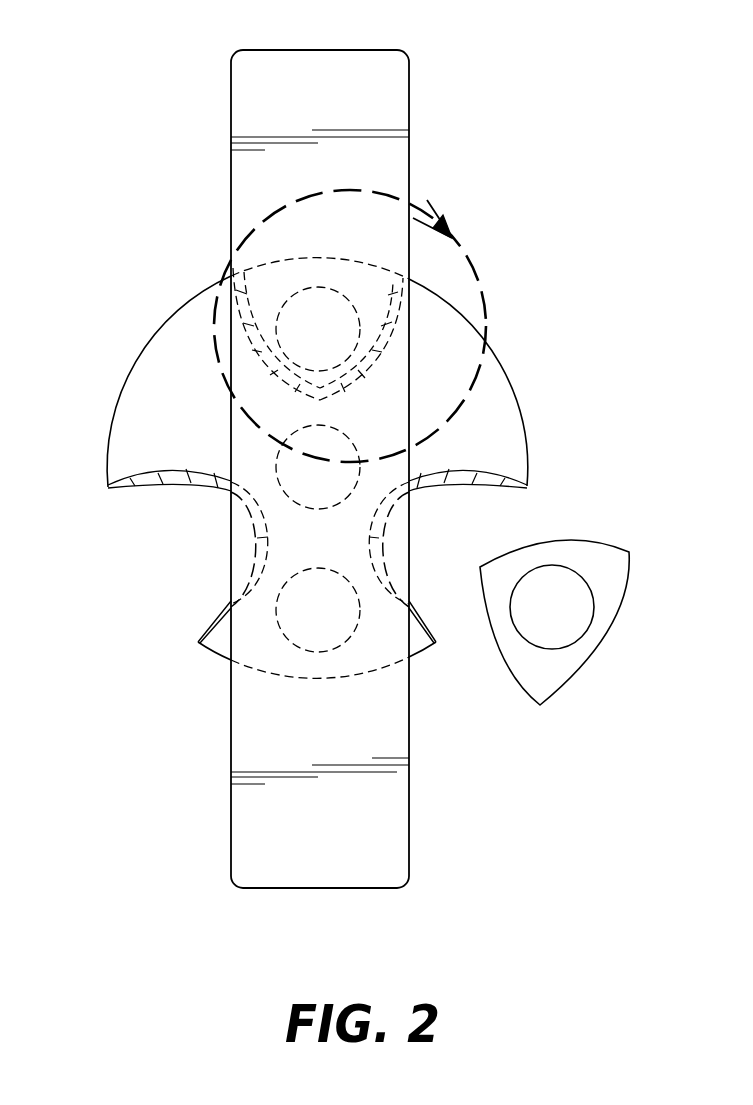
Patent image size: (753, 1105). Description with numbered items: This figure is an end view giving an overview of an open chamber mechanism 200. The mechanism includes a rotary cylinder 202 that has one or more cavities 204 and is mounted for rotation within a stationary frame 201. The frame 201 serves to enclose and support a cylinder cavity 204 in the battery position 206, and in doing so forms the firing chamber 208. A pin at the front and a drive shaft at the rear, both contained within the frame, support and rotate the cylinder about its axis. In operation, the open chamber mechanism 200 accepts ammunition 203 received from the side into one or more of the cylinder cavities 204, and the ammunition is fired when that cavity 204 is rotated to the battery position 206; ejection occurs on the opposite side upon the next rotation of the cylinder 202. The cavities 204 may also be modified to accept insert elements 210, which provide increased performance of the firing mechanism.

The open chamber mechanism 200 is at (481, 82).
The stationary frame 201 is at (230, 73).
The rotary cylinder 202 is at (152, 338).
The ammunition 203 is at (608, 543).
The cavity 204 is at (277, 285).
The battery position 206 is at (363, 264).
The firing chamber 208 is at (297, 292).
The insert element 210 is at (368, 350).